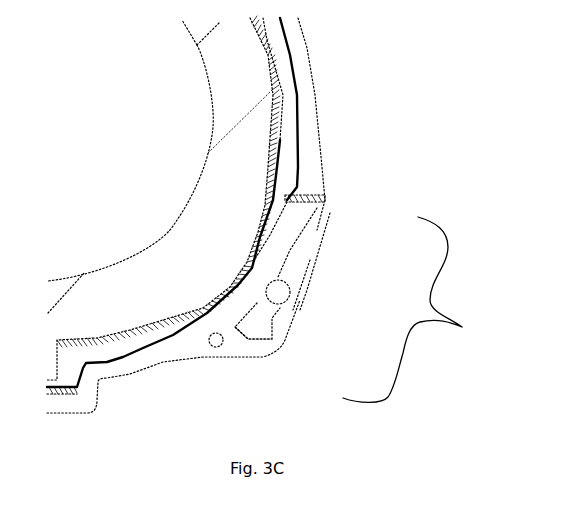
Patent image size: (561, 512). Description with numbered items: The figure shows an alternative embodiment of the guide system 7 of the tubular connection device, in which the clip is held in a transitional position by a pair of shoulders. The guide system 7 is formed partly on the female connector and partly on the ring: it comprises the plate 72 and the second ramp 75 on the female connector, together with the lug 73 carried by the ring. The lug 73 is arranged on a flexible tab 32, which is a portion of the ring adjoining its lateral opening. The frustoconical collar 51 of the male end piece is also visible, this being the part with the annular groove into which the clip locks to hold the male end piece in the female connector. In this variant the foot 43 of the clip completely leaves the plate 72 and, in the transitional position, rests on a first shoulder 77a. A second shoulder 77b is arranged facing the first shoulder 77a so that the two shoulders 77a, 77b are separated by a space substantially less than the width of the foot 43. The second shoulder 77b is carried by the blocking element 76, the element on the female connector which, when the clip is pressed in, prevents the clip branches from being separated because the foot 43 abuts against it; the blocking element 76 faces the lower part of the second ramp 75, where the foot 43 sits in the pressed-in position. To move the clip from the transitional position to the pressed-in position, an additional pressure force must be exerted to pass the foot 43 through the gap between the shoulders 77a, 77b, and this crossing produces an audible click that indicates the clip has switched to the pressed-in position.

The guide system 7 is at (411, 309).
The flexible tab 32 is at (295, 87).
The foot 43 is at (287, 290).
The frustoconical collar 51 is at (153, 288).
The plate 72 is at (247, 272).
The lug 73 is at (295, 218).
The second ramp 75 is at (255, 302).
The blocking element 76 is at (283, 325).
The first shoulder 77a is at (260, 302).
The second shoulder 77b is at (297, 300).